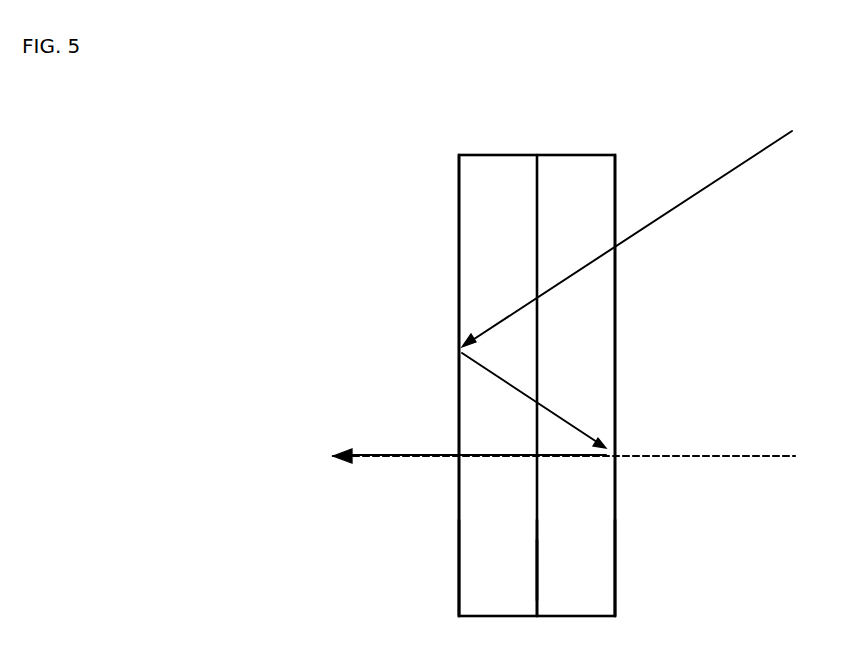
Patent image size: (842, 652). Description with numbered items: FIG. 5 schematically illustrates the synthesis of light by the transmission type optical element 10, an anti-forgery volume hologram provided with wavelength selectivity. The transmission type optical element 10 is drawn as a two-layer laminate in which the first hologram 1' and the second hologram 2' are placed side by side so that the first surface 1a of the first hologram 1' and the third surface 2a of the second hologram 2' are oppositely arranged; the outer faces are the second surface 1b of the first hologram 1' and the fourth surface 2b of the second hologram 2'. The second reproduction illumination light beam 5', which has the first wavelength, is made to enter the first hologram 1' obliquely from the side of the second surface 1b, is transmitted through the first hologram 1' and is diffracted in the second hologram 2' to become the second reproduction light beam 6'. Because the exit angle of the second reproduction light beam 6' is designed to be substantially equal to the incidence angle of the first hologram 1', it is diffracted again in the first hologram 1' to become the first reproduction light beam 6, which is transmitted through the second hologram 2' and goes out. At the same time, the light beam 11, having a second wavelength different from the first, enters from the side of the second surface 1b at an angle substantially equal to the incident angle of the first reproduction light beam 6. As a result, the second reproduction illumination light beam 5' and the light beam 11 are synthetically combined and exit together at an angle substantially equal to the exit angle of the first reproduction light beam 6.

The transmission type optical element 10 is at (433, 242).
The first hologram 1' is at (631, 385).
The second hologram 2' is at (437, 385).
The first surface 1a is at (537, 568).
The second surface 1b is at (614, 590).
The third surface 2a is at (537, 592).
The fourth surface 2b is at (458, 587).
The second reproduction illumination light beam 5' is at (627, 230).
The second reproduction light beam 6' is at (555, 395).
The first reproduction light beam 6 is at (469, 423).
The light beam 11 is at (722, 455).